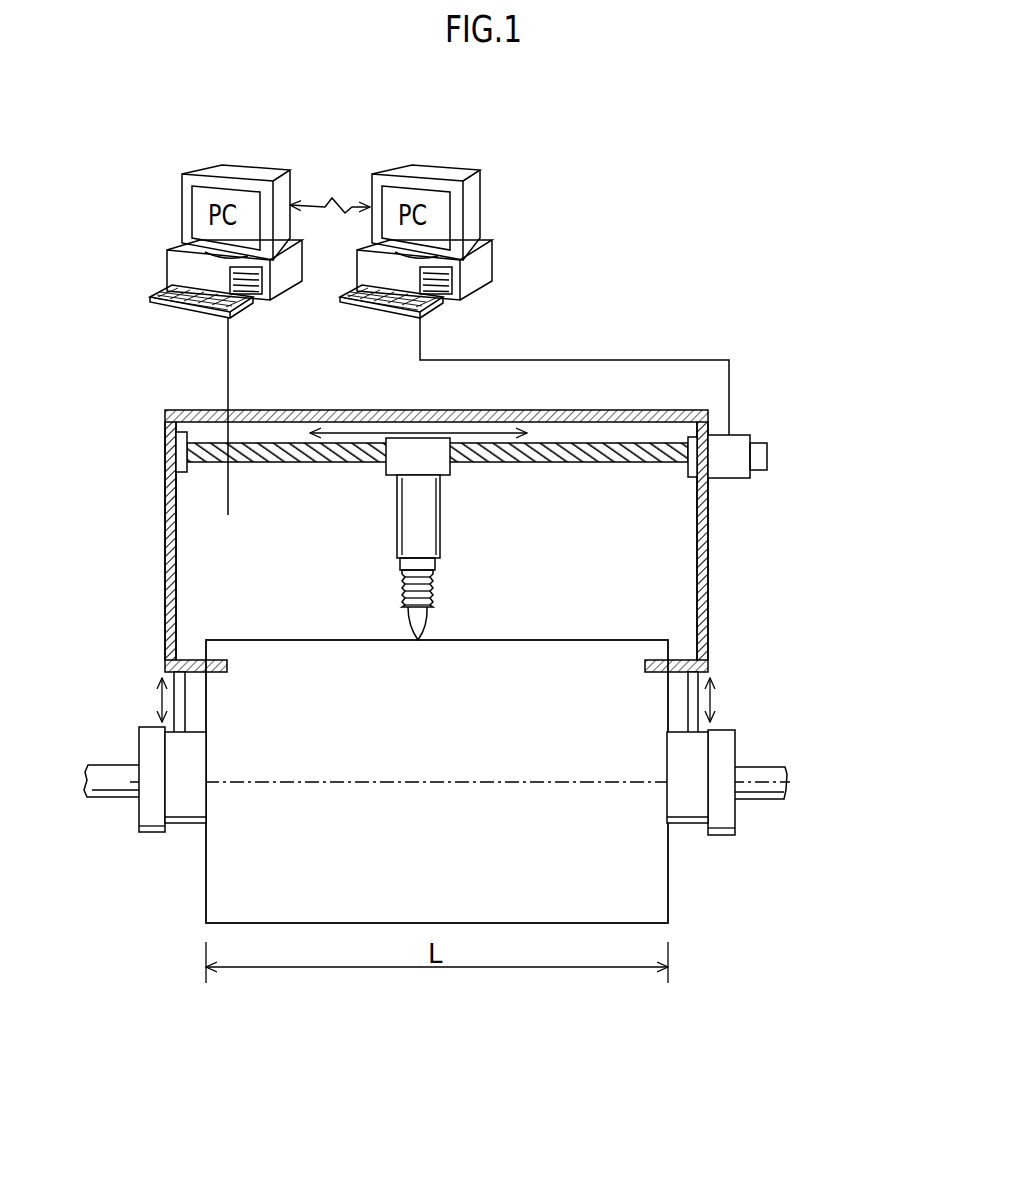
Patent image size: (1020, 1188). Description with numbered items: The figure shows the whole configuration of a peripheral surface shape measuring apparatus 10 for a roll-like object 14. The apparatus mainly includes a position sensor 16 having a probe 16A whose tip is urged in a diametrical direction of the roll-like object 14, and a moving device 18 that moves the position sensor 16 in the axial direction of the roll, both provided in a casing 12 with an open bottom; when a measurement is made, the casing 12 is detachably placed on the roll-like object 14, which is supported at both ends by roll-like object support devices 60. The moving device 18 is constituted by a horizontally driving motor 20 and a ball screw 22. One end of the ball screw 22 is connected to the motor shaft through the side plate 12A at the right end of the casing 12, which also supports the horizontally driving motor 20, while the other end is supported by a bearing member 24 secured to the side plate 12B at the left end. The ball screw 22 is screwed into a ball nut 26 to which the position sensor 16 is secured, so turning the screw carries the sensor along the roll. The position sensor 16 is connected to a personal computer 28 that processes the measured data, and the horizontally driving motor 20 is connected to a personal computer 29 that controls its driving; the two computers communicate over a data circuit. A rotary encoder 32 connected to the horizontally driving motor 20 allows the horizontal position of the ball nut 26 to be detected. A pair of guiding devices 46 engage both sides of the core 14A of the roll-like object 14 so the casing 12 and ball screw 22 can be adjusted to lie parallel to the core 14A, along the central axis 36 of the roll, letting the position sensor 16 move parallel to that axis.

The peripheral surface shape measuring apparatus 10 is at (672, 395).
The casing 12 is at (440, 504).
The side plate 12A is at (708, 543).
The side plate 12B is at (165, 543).
The roll-like object 14 is at (471, 781).
The core 14A is at (700, 740).
The position sensor 16 is at (470, 557).
The probe 16A is at (427, 617).
The moving device 18 is at (572, 477).
The horizontally driving motor 20 is at (745, 435).
The ball screw 22 is at (628, 462).
The bearing member 24 is at (180, 472).
The ball nut 26 is at (440, 468).
The personal computer 28 is at (245, 172).
The personal computer 29 is at (440, 172).
The rotary encoder 32 is at (767, 456).
The roller axis 36 is at (543, 782).
The guiding device 46 is at (168, 753).
The roll-like object support device 60 is at (130, 822).